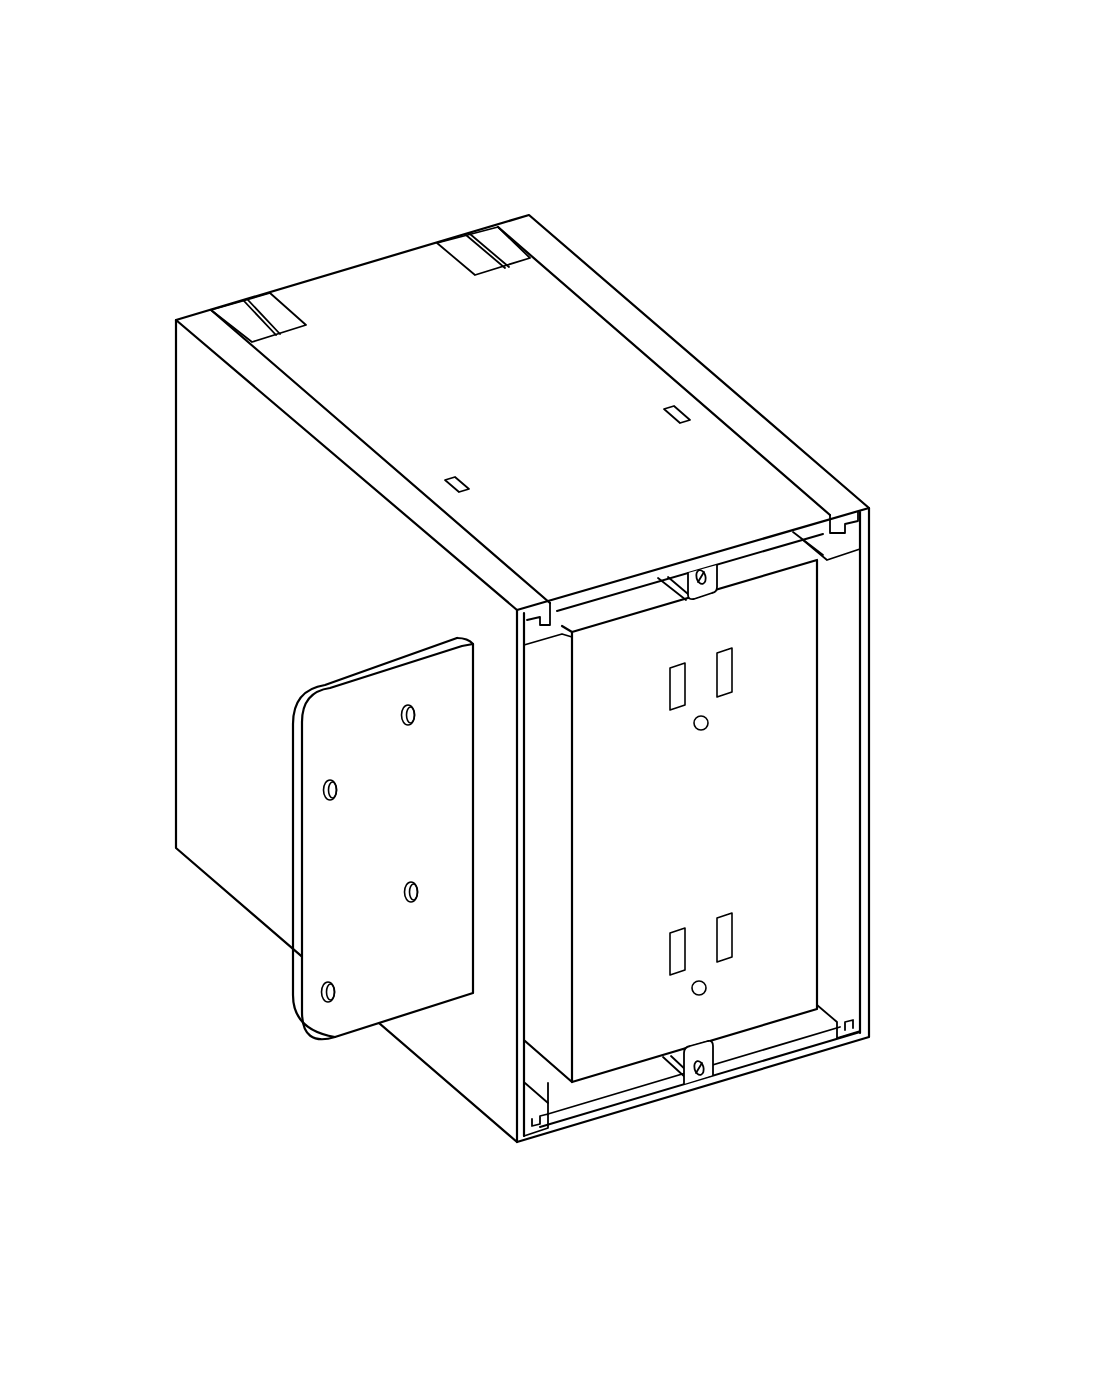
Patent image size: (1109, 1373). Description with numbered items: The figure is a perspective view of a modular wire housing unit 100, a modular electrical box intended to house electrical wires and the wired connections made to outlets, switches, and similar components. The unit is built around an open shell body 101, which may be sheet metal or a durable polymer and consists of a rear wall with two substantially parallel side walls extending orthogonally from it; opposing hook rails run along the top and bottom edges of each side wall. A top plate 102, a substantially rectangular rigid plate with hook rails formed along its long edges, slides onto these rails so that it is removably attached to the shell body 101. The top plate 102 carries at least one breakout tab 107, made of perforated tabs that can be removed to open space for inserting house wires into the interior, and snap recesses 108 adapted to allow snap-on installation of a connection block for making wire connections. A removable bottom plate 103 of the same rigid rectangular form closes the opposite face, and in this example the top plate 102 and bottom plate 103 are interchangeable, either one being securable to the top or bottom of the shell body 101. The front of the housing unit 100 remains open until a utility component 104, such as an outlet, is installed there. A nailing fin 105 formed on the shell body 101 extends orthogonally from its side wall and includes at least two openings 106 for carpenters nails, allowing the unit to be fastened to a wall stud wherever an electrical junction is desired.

The modular wire housing unit 100 is at (732, 108).
The shell body 101 is at (245, 488).
The top plate 102 is at (468, 372).
The bottom plate 103 is at (735, 1080).
The utility component 104 is at (820, 812).
The nailing fin 105 is at (336, 838).
The openings 106 is at (403, 892).
The breakout tab 107 is at (467, 235).
The snap recesses 108 is at (450, 483).